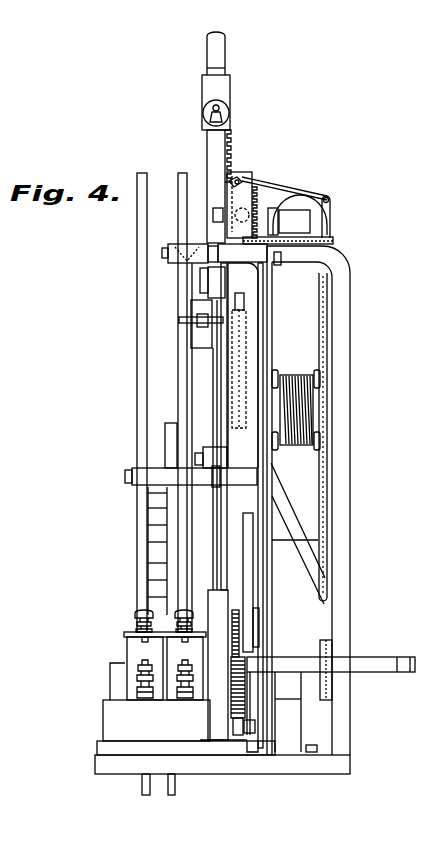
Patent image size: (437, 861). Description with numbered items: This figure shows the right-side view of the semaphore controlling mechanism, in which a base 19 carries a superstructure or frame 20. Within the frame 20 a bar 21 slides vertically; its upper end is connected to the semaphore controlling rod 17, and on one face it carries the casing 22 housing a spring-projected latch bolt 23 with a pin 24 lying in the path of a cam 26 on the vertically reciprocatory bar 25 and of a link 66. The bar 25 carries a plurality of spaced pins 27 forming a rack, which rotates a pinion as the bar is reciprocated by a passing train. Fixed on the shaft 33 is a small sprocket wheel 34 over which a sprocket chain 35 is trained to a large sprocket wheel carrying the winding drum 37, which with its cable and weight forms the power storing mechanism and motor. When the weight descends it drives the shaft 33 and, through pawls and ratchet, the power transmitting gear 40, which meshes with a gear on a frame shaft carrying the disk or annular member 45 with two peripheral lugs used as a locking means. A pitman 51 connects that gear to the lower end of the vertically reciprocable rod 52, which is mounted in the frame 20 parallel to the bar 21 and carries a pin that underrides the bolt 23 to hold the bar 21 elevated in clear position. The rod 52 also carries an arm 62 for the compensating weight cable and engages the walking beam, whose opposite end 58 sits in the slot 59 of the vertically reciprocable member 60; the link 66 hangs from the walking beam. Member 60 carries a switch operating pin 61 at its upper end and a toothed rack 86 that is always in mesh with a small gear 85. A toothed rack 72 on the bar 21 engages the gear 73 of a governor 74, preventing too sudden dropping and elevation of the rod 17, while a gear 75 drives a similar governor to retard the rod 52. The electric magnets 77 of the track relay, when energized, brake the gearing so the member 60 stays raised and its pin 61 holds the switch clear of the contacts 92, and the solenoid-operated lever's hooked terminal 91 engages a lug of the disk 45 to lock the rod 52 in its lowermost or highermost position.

The semaphore controlling rod 17 is at (225, 47).
The base 19 is at (350, 766).
The frame 20 is at (350, 543).
The bar 21 is at (225, 130).
The casing 22 is at (197, 305).
The latch bolt 23 is at (200, 325).
The pin 24 is at (180, 322).
The vertically reciprocatory bar 25 is at (137, 236).
The cam 26 is at (180, 274).
The spaced pins 27 is at (155, 523).
The shaft 33 is at (365, 661).
The small sprocket wheel 34 is at (331, 655).
The sprocket chain 35 is at (324, 503).
The winding drum 37 is at (310, 405).
The power transmitting gear 40 is at (230, 705).
The disk or annular member 45 is at (255, 618).
The pitman 51 is at (217, 522).
The vertically reciprocable rod or bar 52 is at (222, 420).
The end of walking beam 58 is at (242, 313).
The slot 59 is at (245, 300).
The vertically reciprocable bar or member 60 is at (240, 280).
The switch operating pin 61 is at (253, 180).
The arm 62 is at (205, 282).
The link 66 is at (223, 369).
The toothed rack 72 is at (233, 138).
The gear 73 is at (224, 198).
The governor 74 is at (300, 218).
The gear 75 is at (238, 736).
The electric magnets of track relay 77 is at (130, 651).
The small gear 85 is at (253, 640).
The toothed rack 86 is at (243, 578).
The hooked terminal 91 is at (255, 728).
The contacts 92 is at (278, 210).